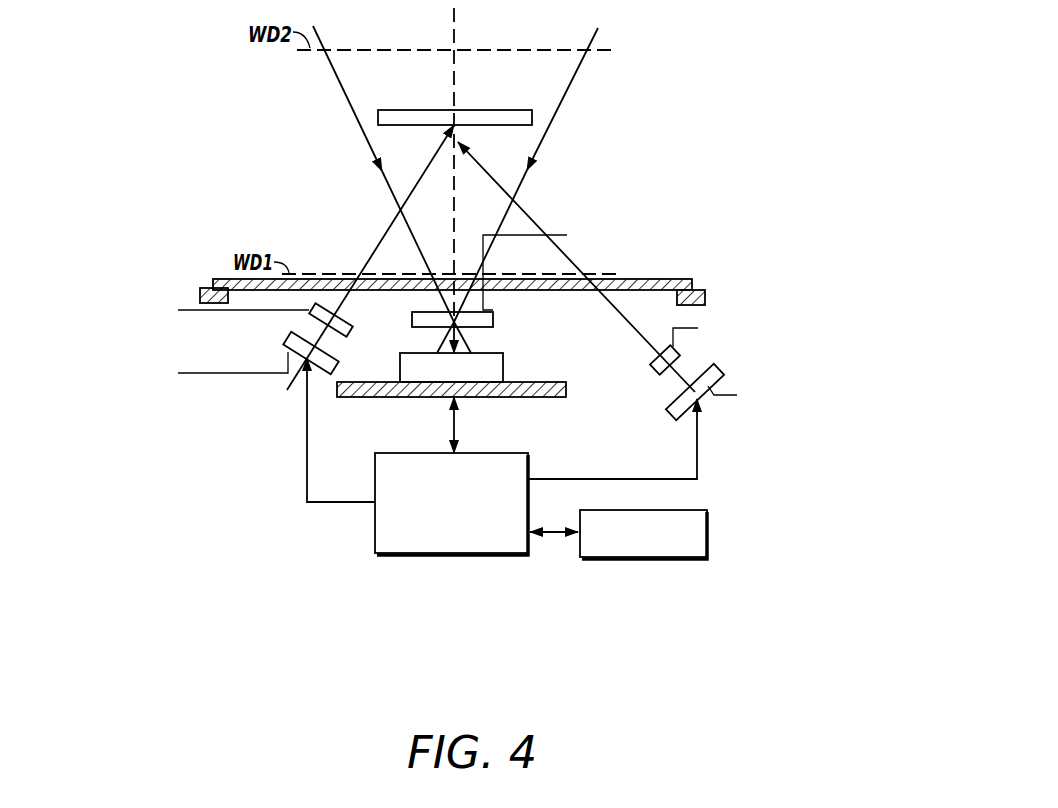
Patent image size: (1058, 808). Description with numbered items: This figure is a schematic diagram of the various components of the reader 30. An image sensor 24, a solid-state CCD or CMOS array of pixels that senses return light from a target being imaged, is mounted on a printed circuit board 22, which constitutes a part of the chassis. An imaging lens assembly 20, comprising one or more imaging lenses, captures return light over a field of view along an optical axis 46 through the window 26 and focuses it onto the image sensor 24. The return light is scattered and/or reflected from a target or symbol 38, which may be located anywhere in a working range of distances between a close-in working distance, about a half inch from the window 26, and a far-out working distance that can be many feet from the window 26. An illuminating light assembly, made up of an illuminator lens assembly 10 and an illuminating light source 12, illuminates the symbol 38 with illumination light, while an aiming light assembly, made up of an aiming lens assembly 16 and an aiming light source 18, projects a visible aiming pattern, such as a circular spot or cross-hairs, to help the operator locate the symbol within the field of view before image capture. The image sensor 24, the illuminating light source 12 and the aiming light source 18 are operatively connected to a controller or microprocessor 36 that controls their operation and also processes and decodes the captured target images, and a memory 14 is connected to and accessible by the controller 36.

The illuminator lens assembly 10 is at (785, 317).
The illuminating light source 12 is at (811, 413).
The memory 14 is at (643, 559).
The aiming lens assembly 16 is at (108, 293).
The aiming light source 18 is at (110, 410).
The imaging lens assembly 20 is at (412, 318).
The printed circuit board 22 is at (502, 398).
The image sensor 24 is at (400, 372).
The window 26 is at (224, 278).
The reader 30 is at (580, 166).
The controller 36 is at (375, 476).
The target 38 is at (489, 109).
The optical axis 46 is at (457, 32).